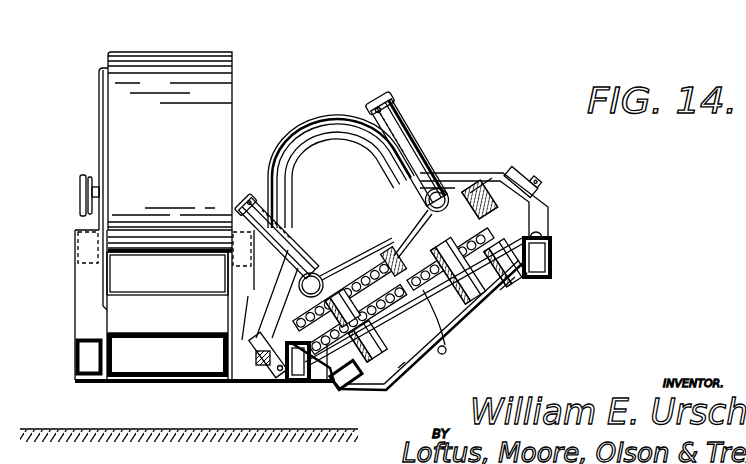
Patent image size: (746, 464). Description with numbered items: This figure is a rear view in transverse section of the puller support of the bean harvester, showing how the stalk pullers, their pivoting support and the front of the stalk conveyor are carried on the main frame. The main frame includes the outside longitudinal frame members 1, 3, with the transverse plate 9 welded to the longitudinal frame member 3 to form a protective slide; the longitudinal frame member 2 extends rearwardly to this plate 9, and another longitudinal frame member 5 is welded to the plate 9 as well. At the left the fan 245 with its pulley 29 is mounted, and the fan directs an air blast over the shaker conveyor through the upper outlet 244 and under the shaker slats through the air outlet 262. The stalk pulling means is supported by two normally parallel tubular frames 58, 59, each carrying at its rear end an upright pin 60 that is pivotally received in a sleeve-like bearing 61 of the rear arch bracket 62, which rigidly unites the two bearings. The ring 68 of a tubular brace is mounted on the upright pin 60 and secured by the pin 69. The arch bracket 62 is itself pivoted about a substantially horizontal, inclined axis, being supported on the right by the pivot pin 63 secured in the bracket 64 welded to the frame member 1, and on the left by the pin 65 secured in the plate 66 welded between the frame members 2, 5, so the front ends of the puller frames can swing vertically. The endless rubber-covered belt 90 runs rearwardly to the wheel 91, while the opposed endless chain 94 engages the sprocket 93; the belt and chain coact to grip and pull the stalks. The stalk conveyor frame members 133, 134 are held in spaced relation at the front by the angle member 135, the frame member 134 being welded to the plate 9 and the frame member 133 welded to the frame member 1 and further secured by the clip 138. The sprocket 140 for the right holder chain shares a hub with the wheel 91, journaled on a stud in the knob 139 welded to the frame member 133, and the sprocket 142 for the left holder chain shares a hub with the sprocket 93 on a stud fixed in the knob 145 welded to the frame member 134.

The fan 245 is at (140, 62).
The pulley 29 is at (81, 175).
The longitudinal frame member 3 is at (82, 281).
The upper outlet 244 is at (138, 277).
The sprocket 93 is at (252, 330).
The air outlet 262 is at (136, 355).
The transverse plate 9 is at (158, 384).
The longitudinal frame member 2 is at (270, 326).
The rear arch bracket 62 is at (317, 125).
The sleeve-like bearing 61 is at (407, 122).
The ring 68 is at (390, 103).
The pin 69 is at (377, 108).
The upright pin 60 is at (420, 143).
The tubular frame 59 is at (447, 190).
The bracket 64 is at (297, 247).
The tubular frame 58 is at (318, 273).
The wheel 91 is at (528, 220).
The pivot pin 63 is at (527, 170).
The endless chain 94 is at (390, 280).
The sprocket 140 is at (495, 305).
The frame member 133 is at (520, 286).
The longitudinal frame member 1 is at (551, 252).
The clip 138 is at (545, 237).
The endless rubber-covered belt 90 is at (492, 210).
The pin 65 is at (258, 372).
The plate 66 is at (281, 372).
The longitudinal frame member 5 is at (310, 380).
The sprocket 142 is at (327, 345).
The frame member 134 is at (340, 393).
The knob 145 is at (398, 368).
The angle member 135 is at (446, 353).
The knob 139 is at (446, 348).